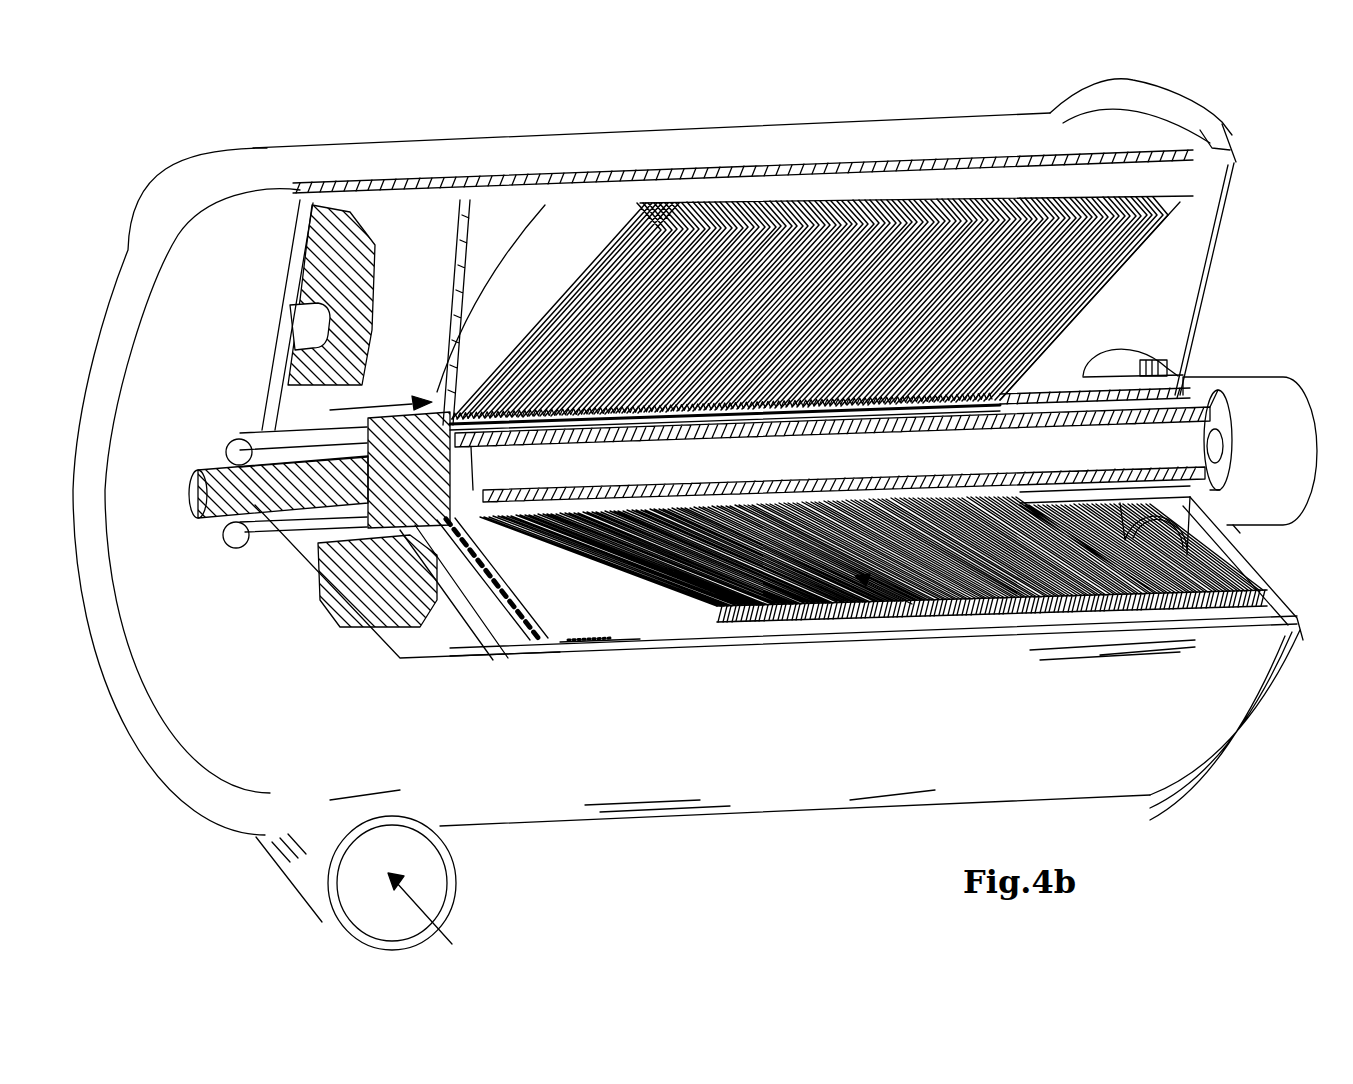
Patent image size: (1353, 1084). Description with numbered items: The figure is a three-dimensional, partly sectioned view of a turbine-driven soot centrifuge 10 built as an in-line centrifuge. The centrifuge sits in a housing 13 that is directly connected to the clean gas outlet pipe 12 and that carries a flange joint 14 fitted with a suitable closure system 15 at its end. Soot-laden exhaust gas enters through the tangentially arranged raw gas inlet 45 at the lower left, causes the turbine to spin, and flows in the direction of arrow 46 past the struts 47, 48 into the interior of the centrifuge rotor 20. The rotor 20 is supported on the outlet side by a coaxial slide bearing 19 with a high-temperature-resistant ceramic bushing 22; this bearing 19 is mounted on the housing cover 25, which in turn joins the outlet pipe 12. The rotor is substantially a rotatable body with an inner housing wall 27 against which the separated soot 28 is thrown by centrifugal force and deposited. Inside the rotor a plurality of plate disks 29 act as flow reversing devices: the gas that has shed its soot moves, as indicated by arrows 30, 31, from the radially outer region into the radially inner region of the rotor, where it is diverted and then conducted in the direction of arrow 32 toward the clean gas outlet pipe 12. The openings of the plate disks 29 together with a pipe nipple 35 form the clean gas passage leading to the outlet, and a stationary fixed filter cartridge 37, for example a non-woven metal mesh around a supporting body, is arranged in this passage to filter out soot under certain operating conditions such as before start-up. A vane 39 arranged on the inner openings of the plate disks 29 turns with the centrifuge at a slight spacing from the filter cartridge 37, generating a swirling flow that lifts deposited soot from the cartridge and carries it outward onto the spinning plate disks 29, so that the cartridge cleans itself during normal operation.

The soot centrifuge 10 is at (560, 118).
The clean gas outlet pipe 12 is at (1258, 400).
The housing 13 is at (812, 122).
The flange joint 14 is at (1232, 114).
The closure system 15 is at (1234, 140).
The bearing 19 is at (1202, 524).
The centrifuge rotor 20 is at (630, 634).
The ceramic bushing 22 is at (1188, 342).
The housing cover 25 is at (1213, 253).
The inner housing wall 27 is at (660, 632).
The separated soot 28 is at (586, 612).
The plate disks 29 is at (757, 200).
The arrow 30 is at (835, 232).
The arrow 31 is at (880, 610).
The arrow 32 is at (1190, 446).
The pipe nipple 35 is at (1065, 488).
The filter cartridge 37 is at (990, 478).
The vane 39 is at (912, 422).
The raw gas inlet 45 is at (440, 865).
The arrow 46 is at (300, 330).
The strut 47 is at (515, 626).
The strut 48 is at (466, 272).